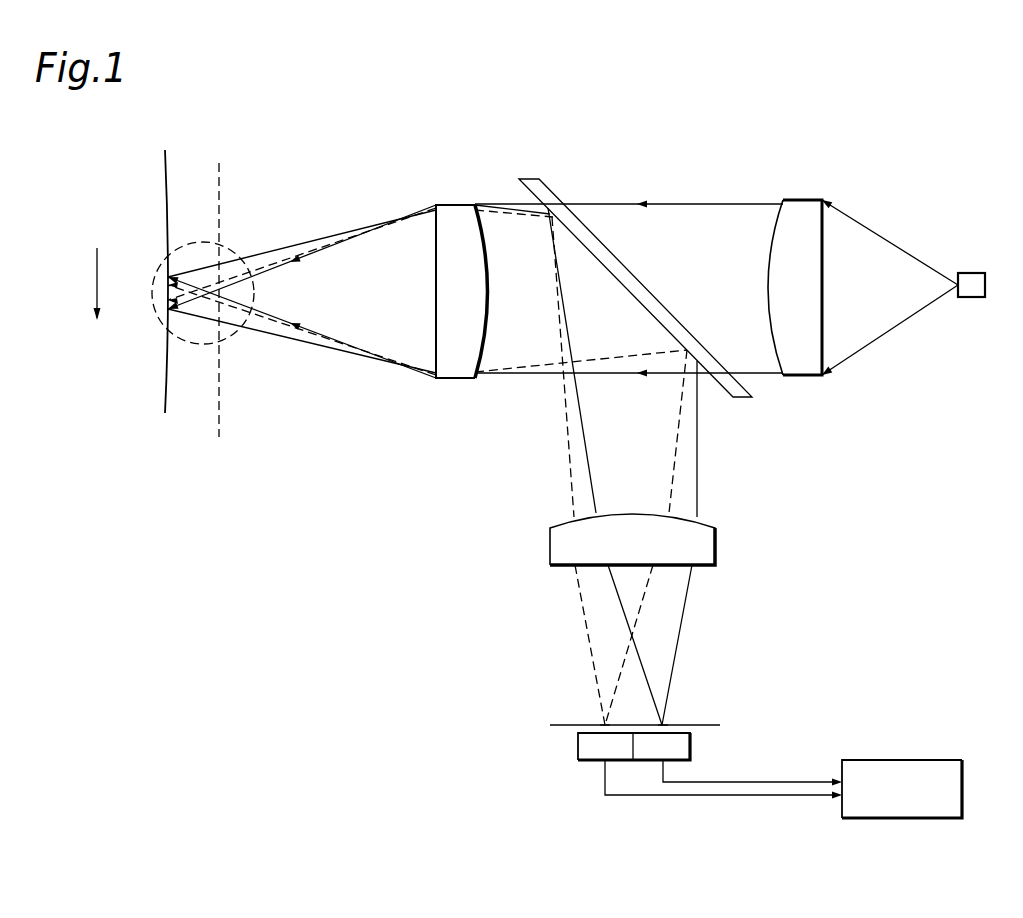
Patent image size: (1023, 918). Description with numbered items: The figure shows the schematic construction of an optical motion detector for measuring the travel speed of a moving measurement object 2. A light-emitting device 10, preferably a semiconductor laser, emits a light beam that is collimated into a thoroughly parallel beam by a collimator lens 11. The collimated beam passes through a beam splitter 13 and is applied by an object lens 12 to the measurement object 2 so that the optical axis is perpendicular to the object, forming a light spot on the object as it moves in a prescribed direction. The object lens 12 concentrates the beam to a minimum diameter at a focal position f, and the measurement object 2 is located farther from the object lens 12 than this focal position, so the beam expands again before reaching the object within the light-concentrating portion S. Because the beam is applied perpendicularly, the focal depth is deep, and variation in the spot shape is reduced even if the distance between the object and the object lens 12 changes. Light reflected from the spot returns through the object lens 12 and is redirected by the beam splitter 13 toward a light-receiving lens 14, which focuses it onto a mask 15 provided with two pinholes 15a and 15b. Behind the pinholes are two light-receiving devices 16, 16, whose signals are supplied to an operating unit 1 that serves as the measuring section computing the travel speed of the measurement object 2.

The operating unit 1 is at (962, 790).
The measurement object 2 is at (165, 167).
The light-concentrating portion S is at (156, 310).
The focal position f is at (219, 311).
The light-emitting device 10 is at (968, 273).
The collimator lens 11 is at (800, 200).
The object lens 12 is at (455, 205).
The beam splitter 13 is at (538, 180).
The light-receiving lens 14 is at (715, 545).
The mask 15 is at (712, 724).
The pinhole 15a is at (665, 722).
The pinhole 15b is at (601, 722).
The light-receiving device 16 is at (583, 749).